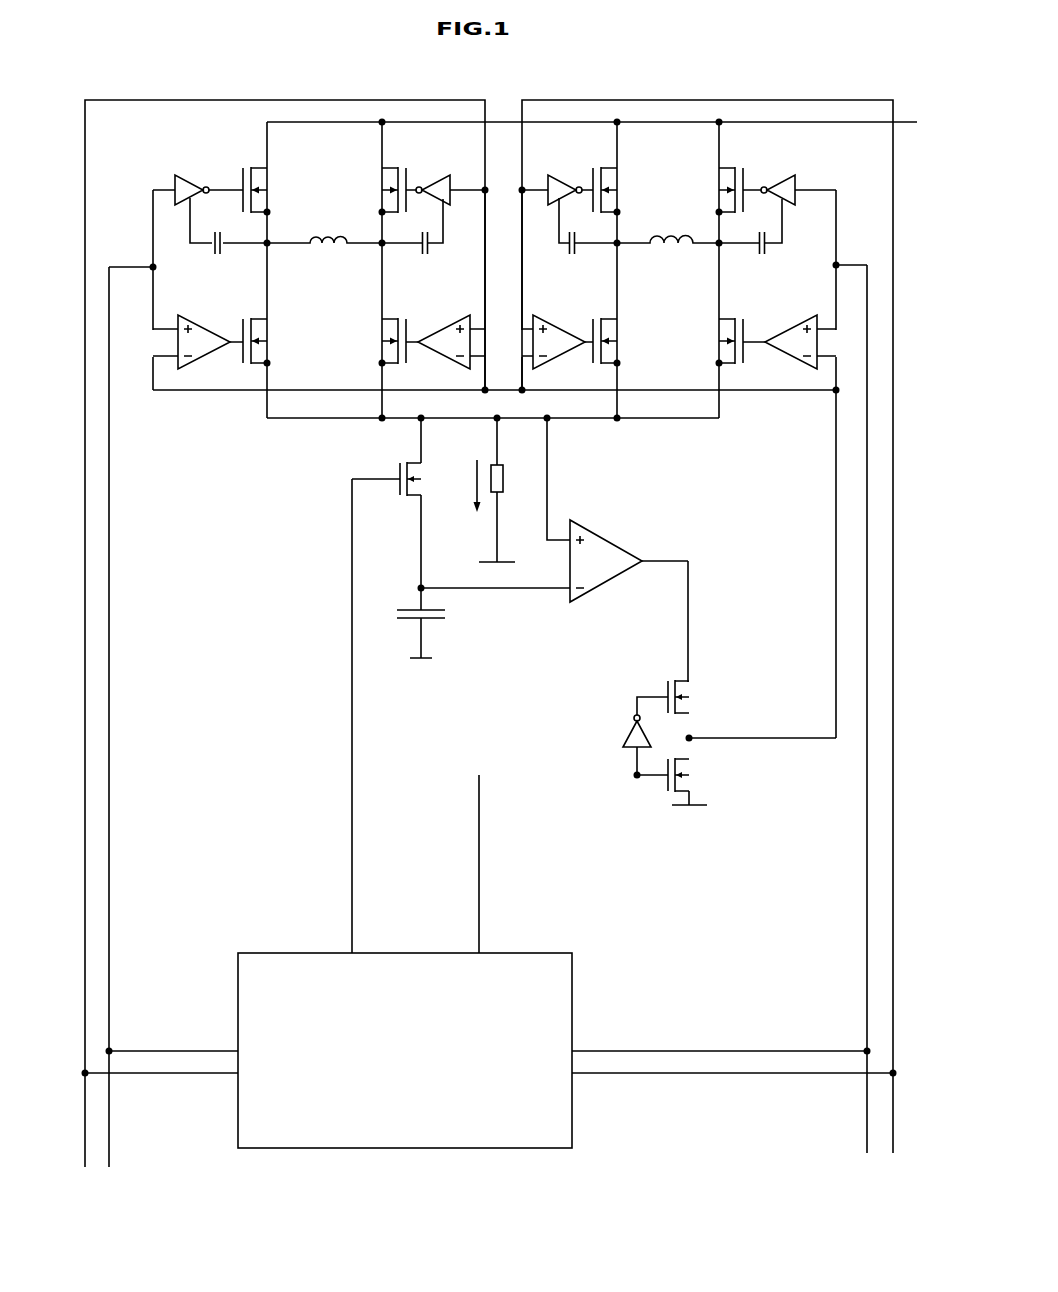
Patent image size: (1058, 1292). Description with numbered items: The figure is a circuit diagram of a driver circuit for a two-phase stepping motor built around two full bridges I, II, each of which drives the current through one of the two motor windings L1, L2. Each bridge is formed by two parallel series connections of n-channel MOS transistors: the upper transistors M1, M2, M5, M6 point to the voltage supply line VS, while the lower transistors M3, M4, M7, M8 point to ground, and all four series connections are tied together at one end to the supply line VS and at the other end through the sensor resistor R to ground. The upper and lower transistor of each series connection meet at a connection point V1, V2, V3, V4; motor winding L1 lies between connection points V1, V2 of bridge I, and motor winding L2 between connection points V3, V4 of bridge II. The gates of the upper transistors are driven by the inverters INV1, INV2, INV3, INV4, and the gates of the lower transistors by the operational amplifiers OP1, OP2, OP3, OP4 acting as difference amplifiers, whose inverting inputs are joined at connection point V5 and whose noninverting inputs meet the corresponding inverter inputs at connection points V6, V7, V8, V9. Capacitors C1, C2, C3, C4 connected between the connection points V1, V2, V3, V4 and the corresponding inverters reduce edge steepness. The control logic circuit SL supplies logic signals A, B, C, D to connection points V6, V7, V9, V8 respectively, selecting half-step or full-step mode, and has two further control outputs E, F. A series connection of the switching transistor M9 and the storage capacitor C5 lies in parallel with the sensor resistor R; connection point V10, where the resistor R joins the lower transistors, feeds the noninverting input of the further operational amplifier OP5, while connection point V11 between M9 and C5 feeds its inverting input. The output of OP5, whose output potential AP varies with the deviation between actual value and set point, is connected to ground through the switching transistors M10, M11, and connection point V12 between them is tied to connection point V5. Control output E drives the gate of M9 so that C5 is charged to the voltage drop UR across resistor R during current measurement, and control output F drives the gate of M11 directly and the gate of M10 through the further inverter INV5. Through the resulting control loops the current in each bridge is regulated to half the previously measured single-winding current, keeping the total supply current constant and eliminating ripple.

The full bridge I is at (285, 614).
The full bridge II is at (707, 607).
The voltage supply line VS is at (605, 125).
The inverter INV1 is at (192, 171).
The inverter INV2 is at (445, 171).
The inverter INV3 is at (557, 171).
The inverter INV4 is at (789, 171).
The further inverter INV5 is at (603, 745).
The upper transistor M1 is at (271, 191).
The upper transistor M2 is at (371, 191).
The lower transistor M3 is at (271, 342).
The lower transistor M4 is at (371, 342).
The upper transistor M5 is at (620, 191).
The upper transistor M6 is at (713, 191).
The lower transistor M7 is at (620, 342).
The lower transistor M8 is at (713, 342).
The switching transistor M9 is at (403, 457).
The further switching transistor M10 is at (686, 697).
The further switching transistor M11 is at (702, 781).
The capacitor C1 is at (228, 240).
The capacitor C2 is at (412, 241).
The capacitor C3 is at (588, 240).
The capacitor C4 is at (750, 241).
The storage capacitor C5 is at (436, 576).
The motor winding L1 is at (324, 256).
The motor winding L2 is at (668, 255).
The operational amplifier OP1 is at (198, 331).
The operational amplifier OP2 is at (445, 290).
The operational amplifier OP3 is at (557, 331).
The operational amplifier OP4 is at (789, 341).
The further operational amplifier OP5 is at (617, 510).
The sensor resistor R is at (499, 490).
The voltage drop UR is at (475, 502).
The connection point V1 is at (281, 232).
The connection point V2 is at (394, 232).
The connection point V3 is at (603, 232).
The connection point V4 is at (706, 232).
The connection point V5 is at (821, 563).
The connection point V6 is at (144, 290).
The connection point V7 is at (472, 204).
The connection point V8 is at (534, 289).
The connection point V9 is at (833, 260).
The connection point V10 is at (497, 418).
The connection point V11 is at (494, 578).
The connection point V12 is at (761, 729).
The output potential AP is at (679, 610).
The control logic circuit SL is at (405, 1050).
The control output E is at (339, 716).
The control output F is at (573, 863).
The logic signal A is at (170, 731).
The logic signal B is at (158, 1133).
The logic signal C is at (722, 724).
The logic signal D is at (736, 1127).